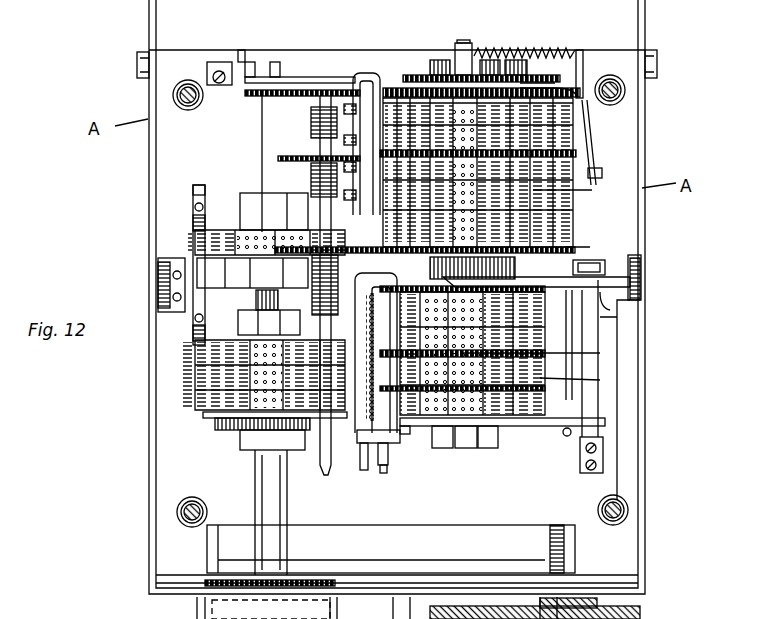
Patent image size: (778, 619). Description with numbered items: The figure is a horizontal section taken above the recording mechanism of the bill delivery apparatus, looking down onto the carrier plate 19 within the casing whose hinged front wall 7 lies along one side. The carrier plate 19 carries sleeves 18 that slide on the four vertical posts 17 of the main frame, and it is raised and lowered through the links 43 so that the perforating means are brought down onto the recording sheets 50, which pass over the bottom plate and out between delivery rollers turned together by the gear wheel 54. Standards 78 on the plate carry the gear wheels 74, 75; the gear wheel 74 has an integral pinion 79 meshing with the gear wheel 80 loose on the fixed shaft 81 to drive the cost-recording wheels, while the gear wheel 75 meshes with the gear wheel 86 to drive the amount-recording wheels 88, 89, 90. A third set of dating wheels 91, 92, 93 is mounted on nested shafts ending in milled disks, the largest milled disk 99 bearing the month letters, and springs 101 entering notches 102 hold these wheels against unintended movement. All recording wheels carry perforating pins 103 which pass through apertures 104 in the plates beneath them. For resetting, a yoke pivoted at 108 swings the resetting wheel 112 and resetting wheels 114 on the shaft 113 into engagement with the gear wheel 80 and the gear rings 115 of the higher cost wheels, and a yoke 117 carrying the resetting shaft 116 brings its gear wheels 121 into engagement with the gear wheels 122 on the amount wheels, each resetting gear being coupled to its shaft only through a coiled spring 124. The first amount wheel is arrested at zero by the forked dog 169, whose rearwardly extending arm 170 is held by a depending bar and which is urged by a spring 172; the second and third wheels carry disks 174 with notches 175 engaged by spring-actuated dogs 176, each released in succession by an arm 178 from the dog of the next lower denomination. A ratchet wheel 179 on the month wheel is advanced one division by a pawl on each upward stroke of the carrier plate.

The front wall 7 is at (620, 577).
The vertical posts 17 is at (625, 93).
The sleeves 18 is at (173, 96).
The carrier plate 19 is at (457, 467).
The links 43 is at (158, 288).
The recording sheets 50 is at (391, 549).
The gear wheel 54 is at (568, 545).
The gear wheel 74 is at (513, 75).
The gear wheel 75 is at (492, 290).
The standards 78 is at (443, 75).
The pinion 79 is at (450, 88).
The gear wheel 80 is at (521, 86).
The fixed shaft 81 is at (467, 47).
The gear wheel 86 is at (420, 288).
The amount-recording wheel 88 is at (620, 328).
The amount-recording wheel 89 is at (600, 381).
The amount-recording wheel 90 is at (515, 426).
The dating wheel 91 is at (206, 203).
The dating wheel 92 is at (241, 278).
The dating wheel 93 is at (190, 366).
The milled disk 99 is at (305, 578).
The springs 101 is at (193, 210).
The notches 102 is at (262, 196).
The perforating pins 103 is at (348, 108).
The apertures 104 is at (230, 427).
The pivot 108 is at (259, 88).
The resetting wheel 112 is at (300, 90).
The shaft 113 is at (322, 460).
The resetting wheels 114 is at (292, 156).
The gear rings 115 is at (555, 153).
The resetting shaft 116 is at (383, 472).
The yoke 117 is at (364, 455).
The gear wheels 121 is at (352, 278).
The gear wheels 122 is at (458, 448).
The coiled spring 124 is at (311, 125).
The dog 169 is at (640, 300).
The rearwardly extending arm 170 is at (640, 305).
The spring 172 is at (582, 462).
The disk 174 is at (592, 191).
The notch 175 is at (602, 176).
The dog 176 is at (585, 256).
The arm 178 is at (590, 130).
The ratchet wheel 179 is at (238, 432).